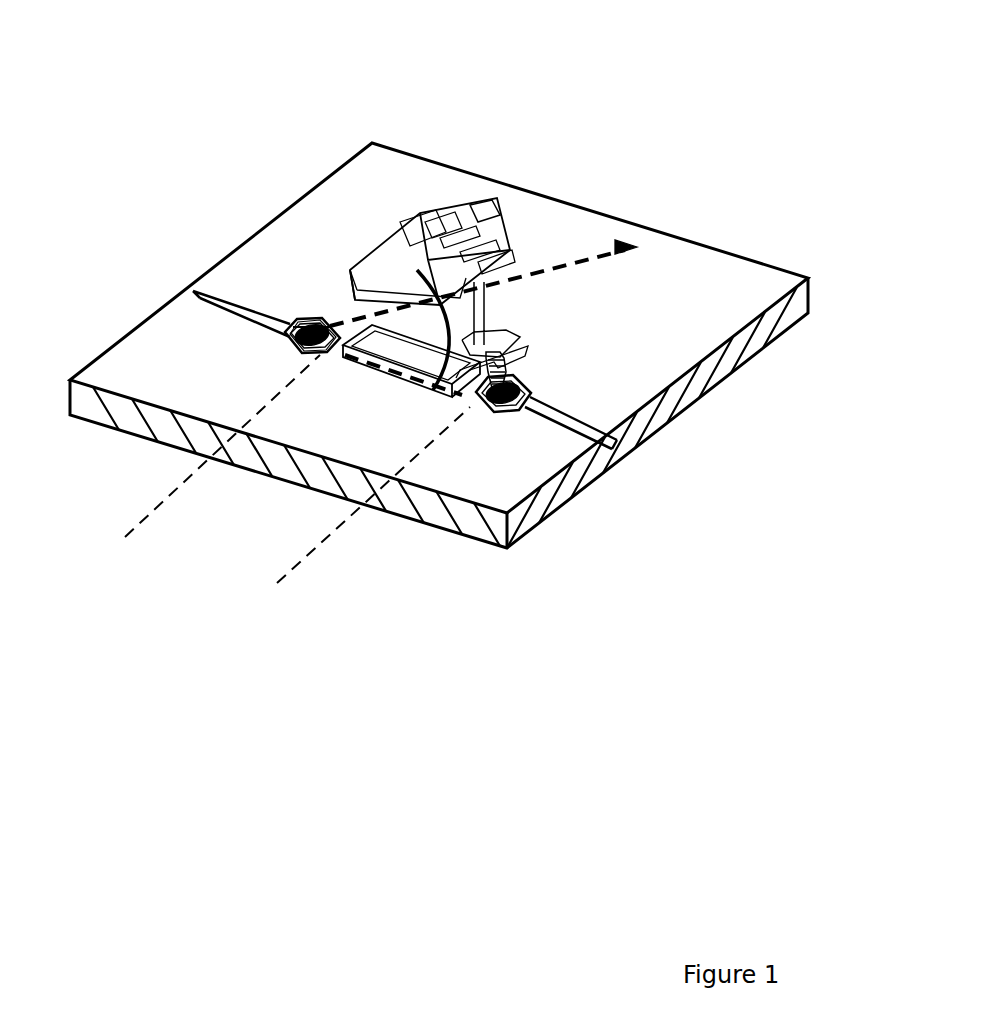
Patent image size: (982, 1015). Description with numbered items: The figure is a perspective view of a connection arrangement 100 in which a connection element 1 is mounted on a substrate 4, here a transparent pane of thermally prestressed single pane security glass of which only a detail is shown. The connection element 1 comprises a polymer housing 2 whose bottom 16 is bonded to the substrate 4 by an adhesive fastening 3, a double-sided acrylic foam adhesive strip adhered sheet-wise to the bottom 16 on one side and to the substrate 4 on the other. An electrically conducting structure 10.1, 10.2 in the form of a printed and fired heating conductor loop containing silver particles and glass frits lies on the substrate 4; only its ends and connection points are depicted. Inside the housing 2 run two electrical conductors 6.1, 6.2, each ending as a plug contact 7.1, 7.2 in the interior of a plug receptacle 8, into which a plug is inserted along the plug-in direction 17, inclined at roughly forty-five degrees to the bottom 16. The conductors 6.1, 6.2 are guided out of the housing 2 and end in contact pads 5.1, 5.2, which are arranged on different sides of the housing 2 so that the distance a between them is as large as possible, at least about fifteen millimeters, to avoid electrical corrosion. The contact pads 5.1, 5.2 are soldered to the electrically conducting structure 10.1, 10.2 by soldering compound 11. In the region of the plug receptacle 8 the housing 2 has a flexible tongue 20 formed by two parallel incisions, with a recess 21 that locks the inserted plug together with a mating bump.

The connection arrangement 100 is at (228, 143).
The connection element 1 is at (502, 190).
The housing 2 is at (388, 250).
The adhesive fastening 3 is at (393, 370).
The substrate 4 is at (633, 437).
The contact pad 5.1 is at (292, 350).
The contact pad 5.2 is at (528, 393).
The electrical conductor 6.1 is at (327, 307).
The electrical conductor 6.2 is at (497, 360).
The plug contact 7.1 is at (463, 240).
The plug contact 7.2 is at (482, 255).
The plug receptacle 8 is at (497, 258).
The electrically conducting structure 10.1 is at (215, 297).
The electrically conducting structure 10.2 is at (563, 423).
The soldering compound 11 is at (293, 327).
The bottom 16 is at (415, 382).
The plug-in direction 17 is at (637, 247).
The flexible tongue 20 is at (413, 235).
The recess 21 is at (437, 225).
The distance a is at (277, 583).